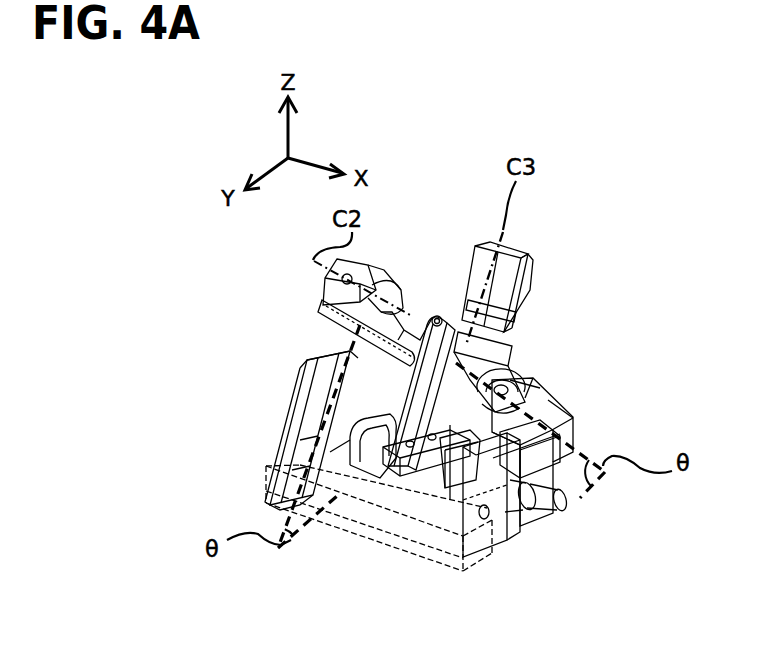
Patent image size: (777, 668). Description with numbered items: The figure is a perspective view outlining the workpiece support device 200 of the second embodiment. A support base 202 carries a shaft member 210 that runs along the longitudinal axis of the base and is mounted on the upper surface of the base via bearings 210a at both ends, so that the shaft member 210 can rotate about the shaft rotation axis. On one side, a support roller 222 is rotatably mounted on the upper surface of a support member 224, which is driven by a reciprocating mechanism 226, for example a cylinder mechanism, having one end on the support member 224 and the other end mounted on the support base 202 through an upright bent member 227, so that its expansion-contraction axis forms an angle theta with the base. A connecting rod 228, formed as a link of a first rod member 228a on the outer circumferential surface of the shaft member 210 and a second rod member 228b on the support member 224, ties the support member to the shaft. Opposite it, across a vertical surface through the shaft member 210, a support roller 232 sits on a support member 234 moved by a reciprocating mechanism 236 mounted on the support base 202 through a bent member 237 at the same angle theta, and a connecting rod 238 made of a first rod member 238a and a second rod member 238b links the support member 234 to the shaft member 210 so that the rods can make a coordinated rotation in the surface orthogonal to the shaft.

The workpiece support device 200 is at (552, 219).
The support base 202 is at (388, 540).
The shaft member 210 is at (560, 504).
The bearings 210a is at (526, 516).
The support roller 222 is at (377, 287).
The support member 224 is at (334, 288).
The reciprocating mechanism 226 is at (351, 338).
The bent member 227 is at (285, 440).
The connecting rod 228 is at (347, 447).
The first rod member 228a is at (381, 460).
The second rod member 228b is at (418, 365).
The support roller 232 is at (468, 275).
The support member 234 is at (540, 250).
The reciprocating mechanism 236 is at (505, 378).
The bent member 237 is at (548, 400).
The connecting rod 238 is at (478, 483).
The first rod member 238a is at (560, 434).
The second rod member 238b is at (460, 437).